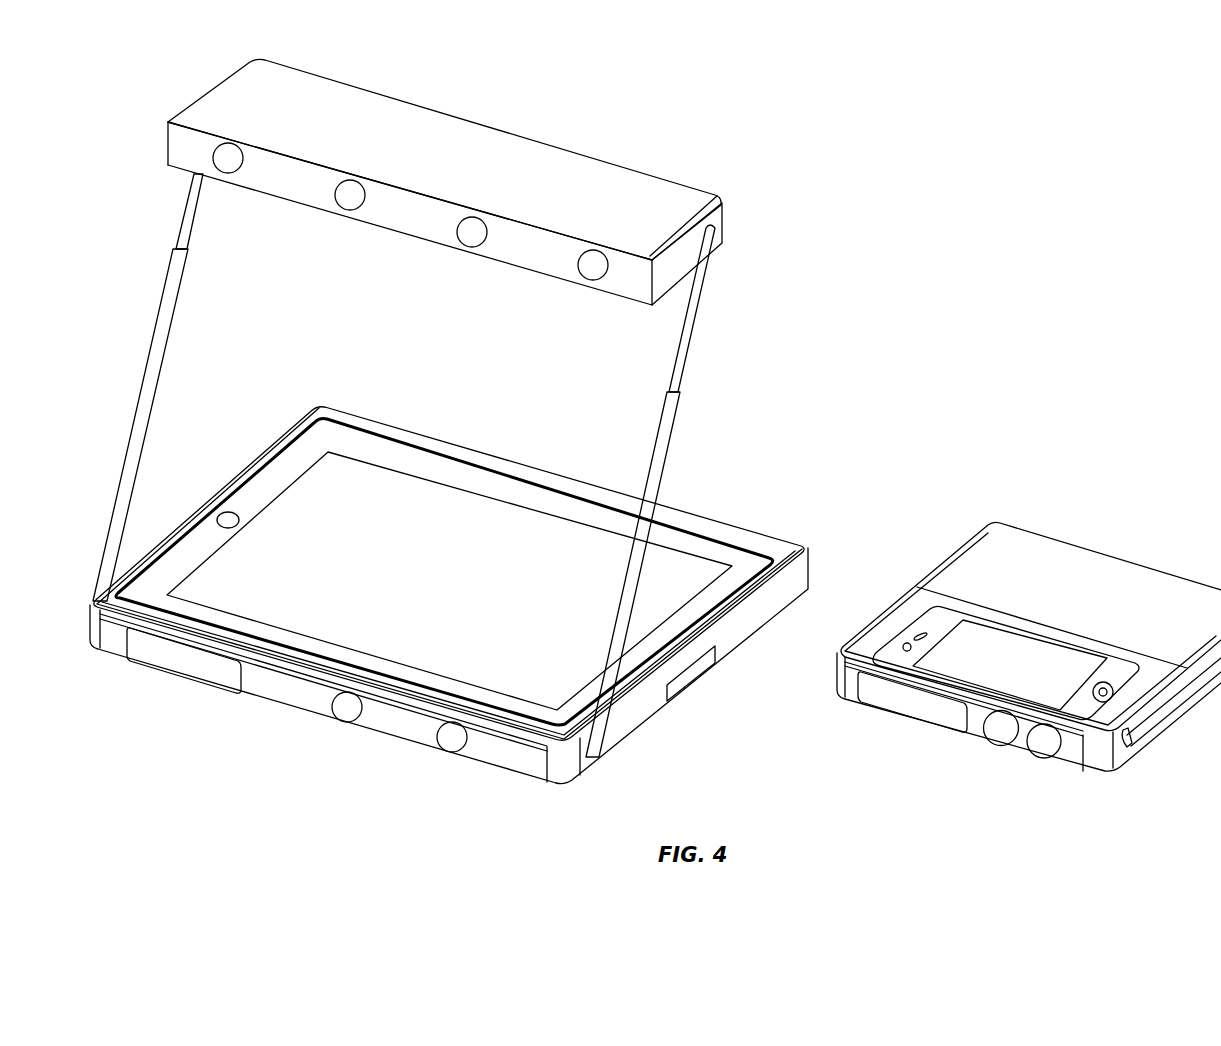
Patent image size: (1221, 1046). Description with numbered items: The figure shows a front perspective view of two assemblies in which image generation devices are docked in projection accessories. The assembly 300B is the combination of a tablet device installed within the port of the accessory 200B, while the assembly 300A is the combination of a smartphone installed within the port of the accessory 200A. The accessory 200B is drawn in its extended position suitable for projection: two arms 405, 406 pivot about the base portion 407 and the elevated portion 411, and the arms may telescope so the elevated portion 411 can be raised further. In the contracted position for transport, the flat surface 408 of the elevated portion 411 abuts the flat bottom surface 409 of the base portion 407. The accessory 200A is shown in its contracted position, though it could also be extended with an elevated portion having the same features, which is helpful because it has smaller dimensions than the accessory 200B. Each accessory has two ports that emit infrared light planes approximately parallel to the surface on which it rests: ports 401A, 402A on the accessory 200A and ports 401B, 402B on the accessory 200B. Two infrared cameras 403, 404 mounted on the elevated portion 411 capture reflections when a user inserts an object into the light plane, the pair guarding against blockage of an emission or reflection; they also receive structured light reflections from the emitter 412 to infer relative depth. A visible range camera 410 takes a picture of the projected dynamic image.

The assembly 300B is at (558, 92).
The assembly 300A is at (1168, 520).
The accessory 200B is at (642, 731).
The accessory 200A is at (838, 679).
The port 401A is at (1002, 728).
The port 402A is at (1045, 743).
The infrared port 401B is at (352, 708).
The infrared port 402B is at (453, 738).
The infrared camera 403 is at (230, 158).
The infrared camera 404 is at (593, 265).
The arm 405 is at (172, 318).
The arm 406 is at (684, 419).
The base portion 407 is at (803, 572).
The flat surface 408 is at (180, 143).
The flat bottom surface 409 is at (727, 523).
The visible range camera 410 is at (350, 195).
The elevated portion 411 is at (315, 75).
The emitter 412 is at (472, 232).